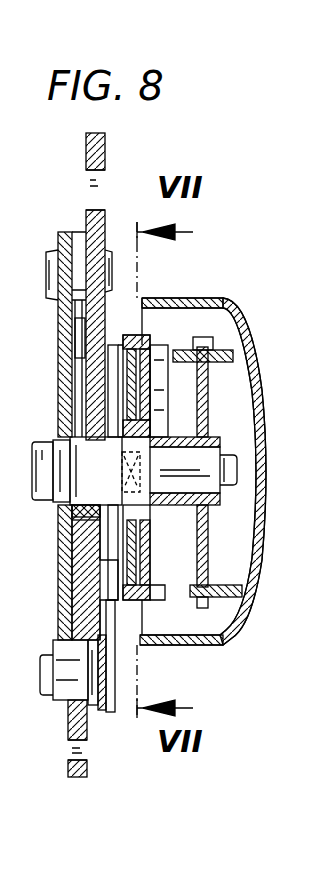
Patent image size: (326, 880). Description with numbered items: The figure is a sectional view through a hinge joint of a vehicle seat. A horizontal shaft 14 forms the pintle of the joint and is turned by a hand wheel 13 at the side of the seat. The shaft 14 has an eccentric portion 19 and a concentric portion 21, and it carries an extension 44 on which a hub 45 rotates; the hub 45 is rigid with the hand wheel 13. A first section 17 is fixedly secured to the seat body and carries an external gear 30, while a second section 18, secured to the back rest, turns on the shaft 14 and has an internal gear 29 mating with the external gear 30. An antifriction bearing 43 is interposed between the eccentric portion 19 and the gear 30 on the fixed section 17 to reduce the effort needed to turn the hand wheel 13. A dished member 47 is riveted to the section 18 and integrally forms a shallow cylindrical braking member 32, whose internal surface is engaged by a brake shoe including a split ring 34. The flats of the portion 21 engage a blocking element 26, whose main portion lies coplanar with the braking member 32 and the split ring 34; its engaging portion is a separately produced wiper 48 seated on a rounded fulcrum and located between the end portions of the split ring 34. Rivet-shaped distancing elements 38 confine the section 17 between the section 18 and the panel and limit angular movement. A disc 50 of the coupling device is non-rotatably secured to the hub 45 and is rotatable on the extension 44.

The hand wheel 13 is at (243, 313).
The shaft 14 is at (34, 486).
The first section or leaf 17 is at (78, 734).
The second section or leaf 18 is at (90, 222).
The eccentric portion 19 is at (92, 456).
The concentric portion 21 is at (212, 515).
The blocking element 26 is at (150, 413).
The internal gear 29 is at (94, 326).
The external gear 30 is at (70, 355).
The braking member 32 is at (148, 338).
The split ring 34 is at (145, 640).
The distancing element 38 is at (36, 681).
The antifriction bearing 43 is at (62, 530).
The extension 44 is at (236, 472).
The hub 45 is at (222, 438).
The dished member 47 is at (130, 335).
The wiper 48 is at (160, 374).
The disc 50 is at (152, 590).